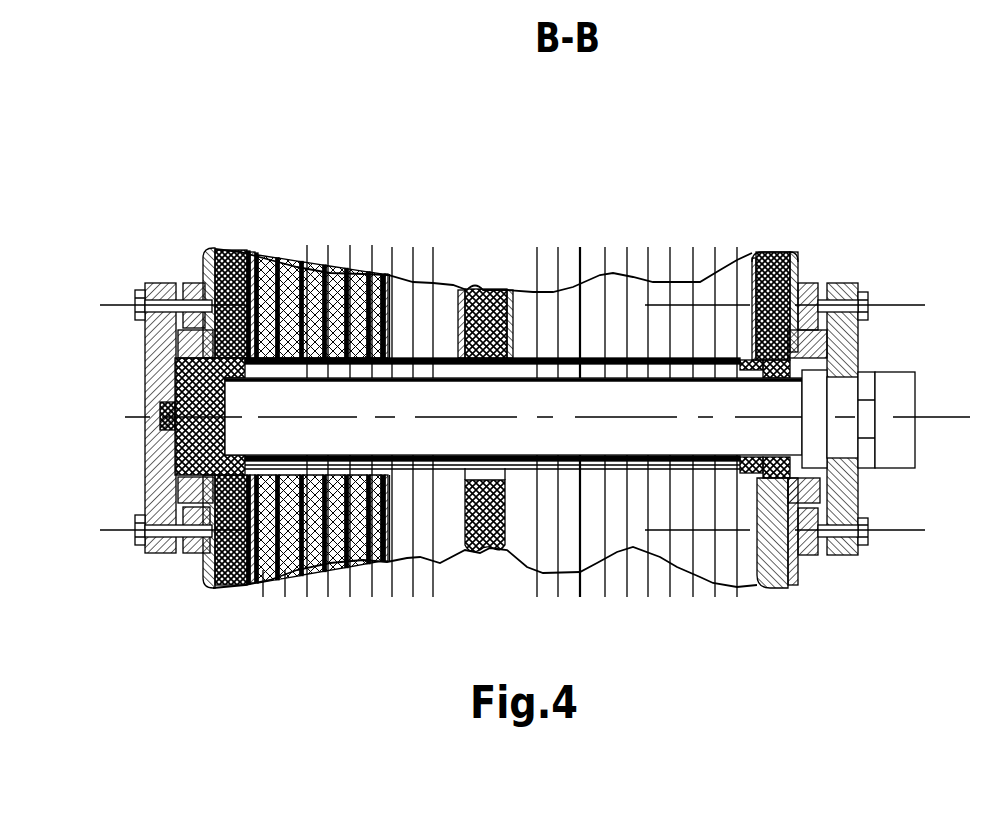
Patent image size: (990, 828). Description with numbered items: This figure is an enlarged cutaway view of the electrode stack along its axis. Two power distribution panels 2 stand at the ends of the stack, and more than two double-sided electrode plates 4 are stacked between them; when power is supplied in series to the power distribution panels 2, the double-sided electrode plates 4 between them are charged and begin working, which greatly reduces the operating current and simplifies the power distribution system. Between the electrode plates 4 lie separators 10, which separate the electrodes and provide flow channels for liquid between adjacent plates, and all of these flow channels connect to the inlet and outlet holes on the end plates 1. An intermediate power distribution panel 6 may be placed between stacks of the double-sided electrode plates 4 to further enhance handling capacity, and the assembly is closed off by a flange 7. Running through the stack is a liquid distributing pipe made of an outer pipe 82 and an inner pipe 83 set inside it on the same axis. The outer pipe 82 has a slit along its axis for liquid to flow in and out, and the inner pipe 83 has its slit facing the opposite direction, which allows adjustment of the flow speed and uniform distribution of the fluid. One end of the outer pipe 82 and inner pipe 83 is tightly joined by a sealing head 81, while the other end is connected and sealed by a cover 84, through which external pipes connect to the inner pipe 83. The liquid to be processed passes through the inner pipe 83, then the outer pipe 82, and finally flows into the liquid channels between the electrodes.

The side plate 1 is at (240, 248).
The power distribution panel 2 is at (258, 255).
The double-sided electrode plate 4 is at (362, 275).
The intermediate power distribution panel 6 is at (488, 290).
The flange 7 is at (160, 337).
The separator 10 is at (389, 276).
The sealing head 81 is at (278, 258).
The outer pipe 82 is at (603, 378).
The inner pipe 83 is at (638, 380).
The cover 84 is at (798, 282).